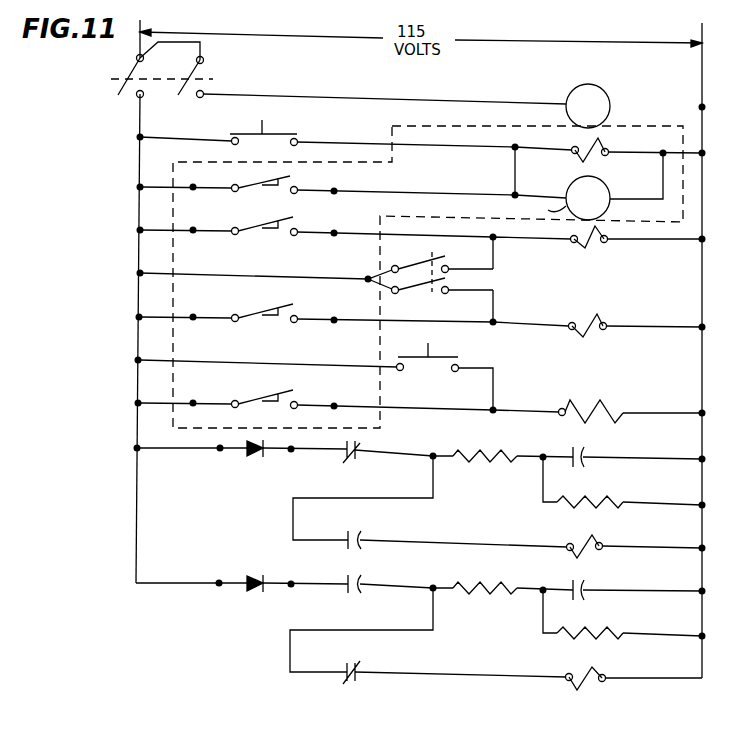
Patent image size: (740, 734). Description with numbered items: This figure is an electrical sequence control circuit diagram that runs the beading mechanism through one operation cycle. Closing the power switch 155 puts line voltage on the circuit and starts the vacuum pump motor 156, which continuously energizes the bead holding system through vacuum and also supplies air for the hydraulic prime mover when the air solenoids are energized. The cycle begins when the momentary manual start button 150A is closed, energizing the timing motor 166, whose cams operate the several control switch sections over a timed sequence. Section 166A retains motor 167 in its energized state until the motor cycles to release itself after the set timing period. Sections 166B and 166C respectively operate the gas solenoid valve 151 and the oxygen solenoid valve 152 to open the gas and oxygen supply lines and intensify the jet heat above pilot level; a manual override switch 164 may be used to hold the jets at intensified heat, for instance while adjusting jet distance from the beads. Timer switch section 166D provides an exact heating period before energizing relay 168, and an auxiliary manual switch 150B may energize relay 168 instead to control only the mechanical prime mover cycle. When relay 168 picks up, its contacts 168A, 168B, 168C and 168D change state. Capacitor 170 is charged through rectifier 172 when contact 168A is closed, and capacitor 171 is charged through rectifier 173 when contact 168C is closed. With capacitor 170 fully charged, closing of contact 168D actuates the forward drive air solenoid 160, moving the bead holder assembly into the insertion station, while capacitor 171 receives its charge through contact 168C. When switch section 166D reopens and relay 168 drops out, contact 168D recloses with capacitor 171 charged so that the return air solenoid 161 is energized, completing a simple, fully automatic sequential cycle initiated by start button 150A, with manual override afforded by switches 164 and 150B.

The power switch 155 is at (179, 70).
The vacuum pump motor 156 is at (607, 92).
The momentary manual start button 150A is at (247, 133).
The motor 167 is at (600, 140).
The control switch section 166A is at (265, 181).
The timing motor 166 is at (576, 186).
The control switch section 166B is at (265, 224).
The gas solenoid valve 151 is at (572, 235).
The manual override switch 164 is at (432, 252).
The control switch section 166C is at (265, 311).
The oxygen solenoid valve 152 is at (583, 338).
The auxiliary manual switch 150B is at (451, 357).
The timer switch section 166D is at (265, 397).
The relay 168 is at (608, 407).
The rectifier 172 is at (252, 457).
The relay contact 168A is at (347, 458).
The capacitor 170 is at (585, 456).
The relay contact 168B is at (364, 524).
The forward drive air solenoid 160 is at (576, 548).
The rectifier 173 is at (252, 577).
The relay contact 168C is at (364, 574).
The capacitor 171 is at (590, 585).
The relay contact 168D is at (364, 659).
The return air solenoid 161 is at (577, 680).